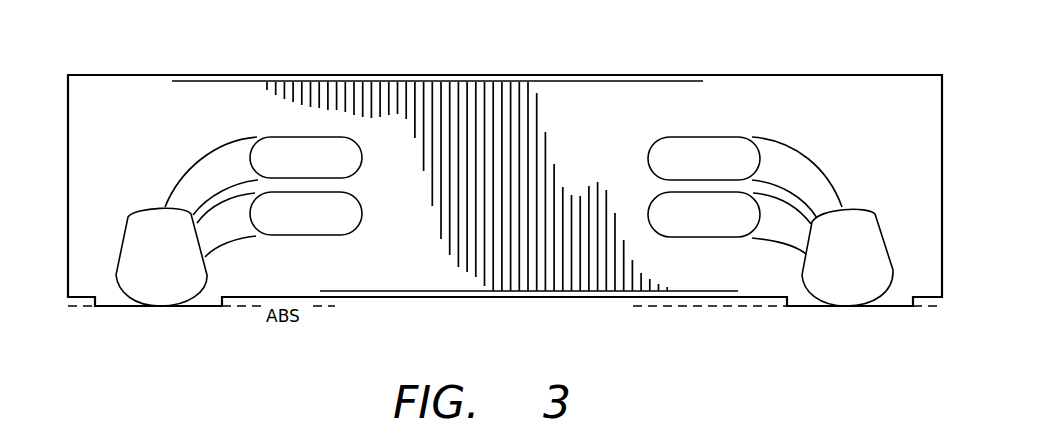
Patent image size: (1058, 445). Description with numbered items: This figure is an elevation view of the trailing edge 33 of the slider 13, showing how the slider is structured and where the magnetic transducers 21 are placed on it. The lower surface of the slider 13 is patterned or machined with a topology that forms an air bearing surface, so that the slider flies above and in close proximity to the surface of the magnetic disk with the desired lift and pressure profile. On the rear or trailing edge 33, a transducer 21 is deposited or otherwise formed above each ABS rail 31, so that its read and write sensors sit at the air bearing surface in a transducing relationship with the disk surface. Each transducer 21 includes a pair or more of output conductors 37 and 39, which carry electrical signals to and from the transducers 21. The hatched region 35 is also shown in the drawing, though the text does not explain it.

The slider 13 is at (575, 63).
The transducer 21 is at (162, 292).
The ABS rail 31 is at (178, 312).
The trailing edge 33 is at (889, 98).
The coil 35 is at (538, 306).
The output conductor 37 is at (292, 152).
The output conductor 39 is at (293, 222).